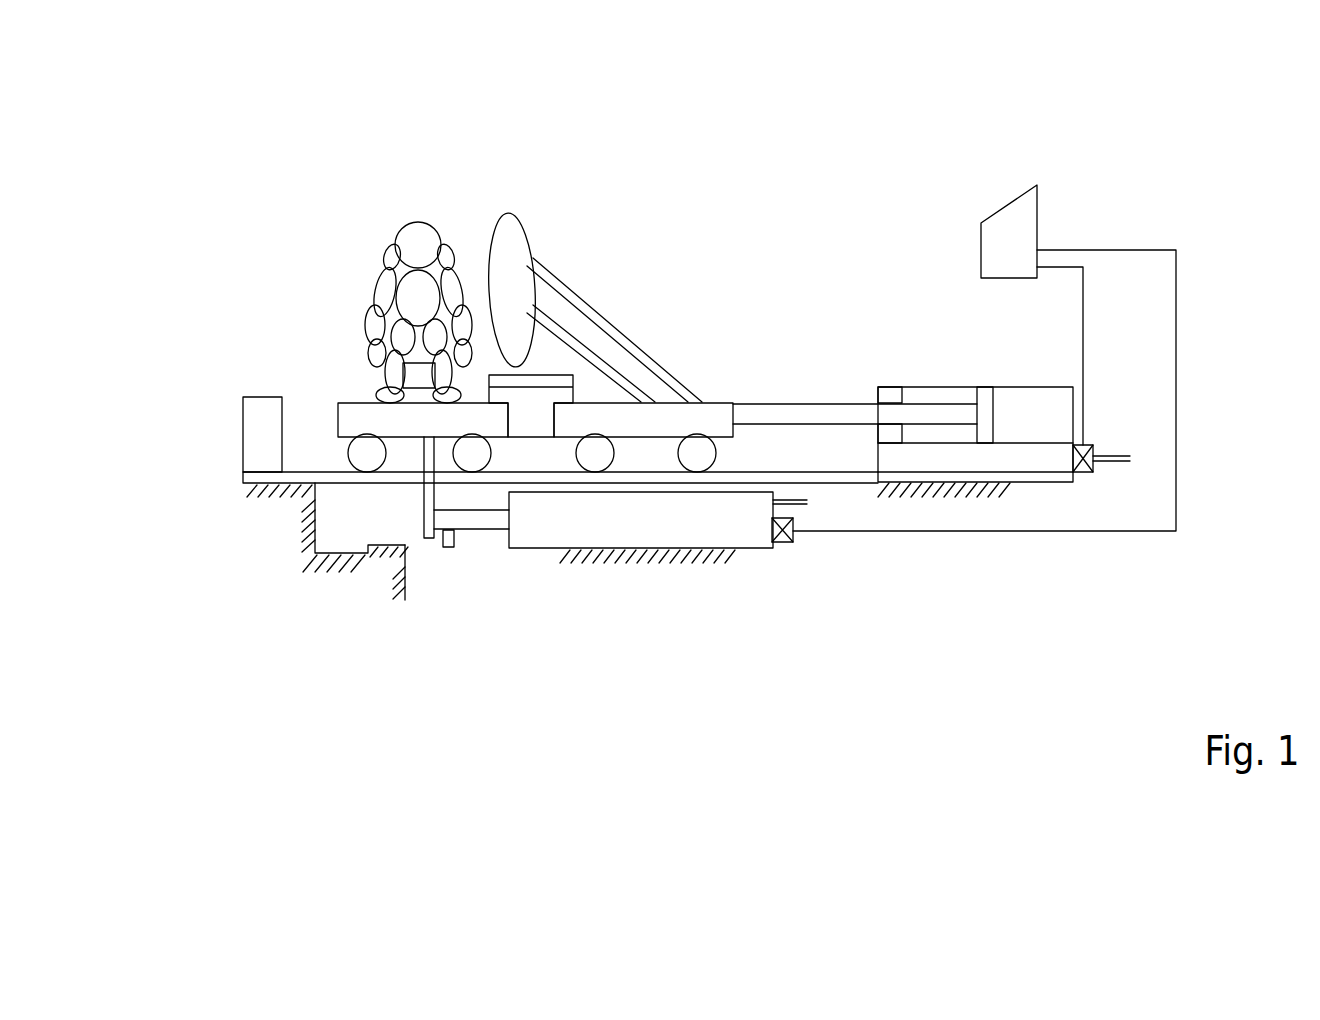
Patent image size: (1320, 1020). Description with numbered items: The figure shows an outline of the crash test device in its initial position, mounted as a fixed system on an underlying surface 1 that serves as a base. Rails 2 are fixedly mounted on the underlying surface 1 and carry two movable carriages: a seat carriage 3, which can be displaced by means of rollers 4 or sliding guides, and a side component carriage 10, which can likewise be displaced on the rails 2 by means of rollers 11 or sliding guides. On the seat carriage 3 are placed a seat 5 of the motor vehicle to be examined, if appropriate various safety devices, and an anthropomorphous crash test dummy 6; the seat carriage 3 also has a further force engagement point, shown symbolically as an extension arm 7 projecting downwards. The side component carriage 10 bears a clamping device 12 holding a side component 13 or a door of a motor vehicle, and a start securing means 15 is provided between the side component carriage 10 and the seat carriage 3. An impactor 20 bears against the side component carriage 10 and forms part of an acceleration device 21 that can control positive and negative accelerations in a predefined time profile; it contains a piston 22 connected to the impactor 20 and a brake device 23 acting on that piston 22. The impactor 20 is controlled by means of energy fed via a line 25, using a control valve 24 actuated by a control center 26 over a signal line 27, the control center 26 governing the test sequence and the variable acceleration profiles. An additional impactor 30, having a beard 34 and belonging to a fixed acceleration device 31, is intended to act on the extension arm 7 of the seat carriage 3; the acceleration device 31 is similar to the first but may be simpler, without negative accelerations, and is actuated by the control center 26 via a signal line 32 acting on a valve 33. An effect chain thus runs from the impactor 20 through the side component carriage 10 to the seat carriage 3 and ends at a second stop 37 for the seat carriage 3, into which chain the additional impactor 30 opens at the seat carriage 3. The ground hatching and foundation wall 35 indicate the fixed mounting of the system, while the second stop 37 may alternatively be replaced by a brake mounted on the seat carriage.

The underlying surface 1 is at (288, 493).
The rails 2 is at (337, 478).
The seat carriage 3 is at (377, 417).
The rollers 4 is at (363, 453).
The seat 5 is at (418, 382).
The anthropomorphous crash test dummy 6 is at (415, 283).
The extension arm 7 is at (428, 492).
The side component carriage 10 is at (692, 413).
The rollers 11 is at (689, 418).
The push rods 12 is at (576, 343).
The side component 13 is at (512, 232).
The start securing means 15 is at (519, 360).
The impactor 20 is at (823, 412).
The acceleration device 21 is at (924, 518).
The piston 22 is at (985, 408).
The brake device 23 is at (895, 396).
The control valve 24 is at (1088, 462).
The line 25 is at (1120, 458).
The control center 26 is at (1020, 240).
The signal line 27 is at (1083, 336).
The additional impactor 30 is at (479, 519).
The acceleration device 31 is at (581, 523).
The signal line 32 is at (1176, 287).
The valve 33 is at (780, 537).
The beard 34 is at (448, 538).
The foundation wall 35 is at (406, 556).
The second stop 37 is at (260, 443).